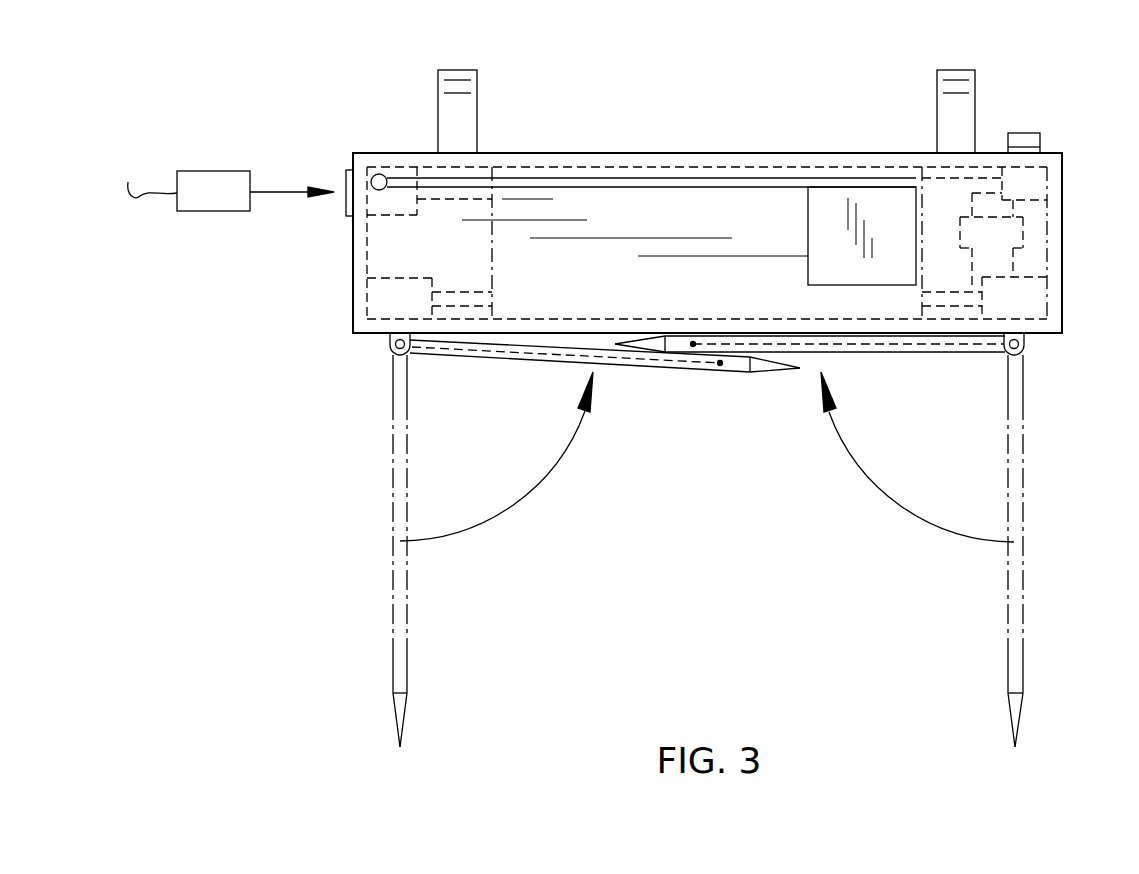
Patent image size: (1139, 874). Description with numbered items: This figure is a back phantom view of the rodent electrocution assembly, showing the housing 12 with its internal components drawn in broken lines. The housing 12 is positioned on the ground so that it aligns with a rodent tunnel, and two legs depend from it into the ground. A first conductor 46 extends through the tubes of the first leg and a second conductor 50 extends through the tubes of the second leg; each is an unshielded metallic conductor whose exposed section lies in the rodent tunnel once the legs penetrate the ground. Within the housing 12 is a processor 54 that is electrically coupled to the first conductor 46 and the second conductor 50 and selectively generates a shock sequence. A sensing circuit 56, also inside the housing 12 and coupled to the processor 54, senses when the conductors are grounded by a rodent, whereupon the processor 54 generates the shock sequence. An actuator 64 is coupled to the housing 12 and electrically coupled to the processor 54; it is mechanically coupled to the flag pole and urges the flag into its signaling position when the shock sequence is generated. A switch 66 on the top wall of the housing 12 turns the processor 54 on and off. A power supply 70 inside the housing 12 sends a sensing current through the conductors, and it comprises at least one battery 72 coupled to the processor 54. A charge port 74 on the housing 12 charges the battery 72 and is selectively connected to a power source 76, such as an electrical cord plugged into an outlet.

The housing 12 is at (353, 153).
The first conductor 46 is at (519, 352).
The second conductor 50 is at (928, 346).
The processor 54 is at (1023, 228).
The sensing circuit 56 is at (395, 270).
The actuator 64 is at (379, 175).
The switch 66 is at (1018, 133).
The power supply 70 is at (490, 213).
The battery 72 is at (492, 242).
The charge port 74 is at (346, 183).
The power source 76 is at (207, 171).